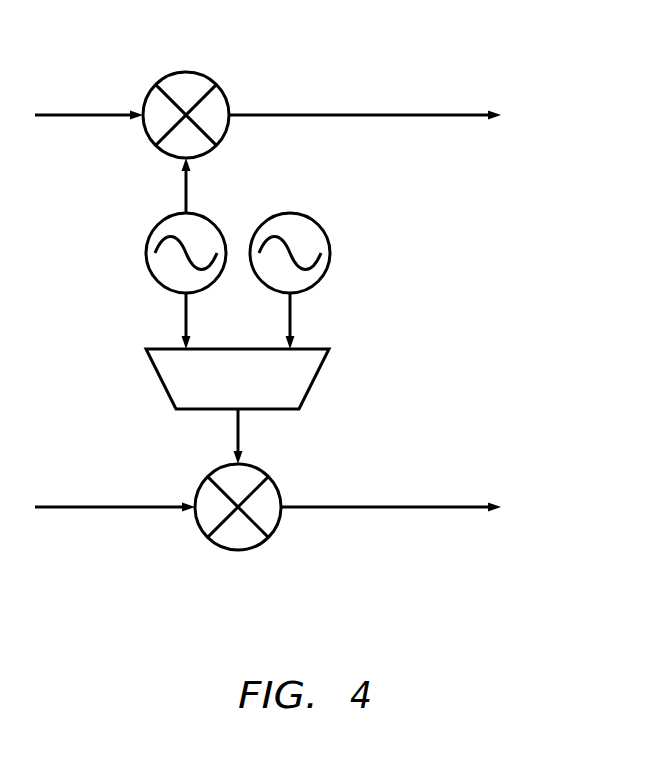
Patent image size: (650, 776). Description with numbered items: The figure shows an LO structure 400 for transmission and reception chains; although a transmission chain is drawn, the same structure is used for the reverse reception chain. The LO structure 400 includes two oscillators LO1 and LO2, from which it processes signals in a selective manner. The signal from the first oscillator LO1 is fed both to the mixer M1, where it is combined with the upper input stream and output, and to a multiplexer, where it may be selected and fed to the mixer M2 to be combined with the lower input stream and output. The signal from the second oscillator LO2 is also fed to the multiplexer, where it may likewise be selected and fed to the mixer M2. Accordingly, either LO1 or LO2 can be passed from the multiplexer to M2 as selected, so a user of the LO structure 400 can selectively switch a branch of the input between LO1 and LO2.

The LO structure 400 is at (567, 293).
The mixer M1 is at (218, 87).
The mixer M2 is at (273, 527).
The first oscillator LO1 is at (150, 253).
The second oscillator LO2 is at (325, 253).